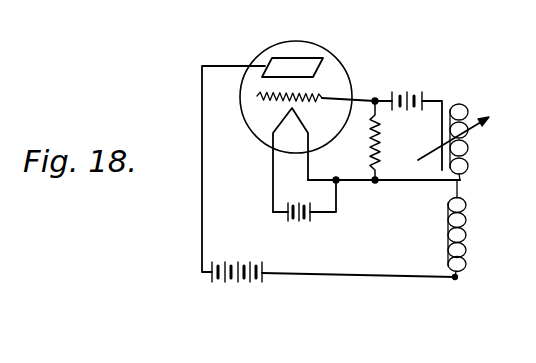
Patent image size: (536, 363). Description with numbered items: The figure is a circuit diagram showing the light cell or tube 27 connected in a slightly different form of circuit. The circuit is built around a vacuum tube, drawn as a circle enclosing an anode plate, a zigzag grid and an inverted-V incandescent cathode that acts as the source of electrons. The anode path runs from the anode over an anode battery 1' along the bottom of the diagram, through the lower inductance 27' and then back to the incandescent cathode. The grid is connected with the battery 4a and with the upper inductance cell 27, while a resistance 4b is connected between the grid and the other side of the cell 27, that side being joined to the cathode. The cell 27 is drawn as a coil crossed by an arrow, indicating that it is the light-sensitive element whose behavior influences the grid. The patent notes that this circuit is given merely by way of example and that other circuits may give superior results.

The battery 4a is at (412, 89).
The resistance 4b is at (388, 151).
The light cell 27 is at (468, 128).
The inductance 27' is at (477, 228).
The battery 1' is at (237, 289).